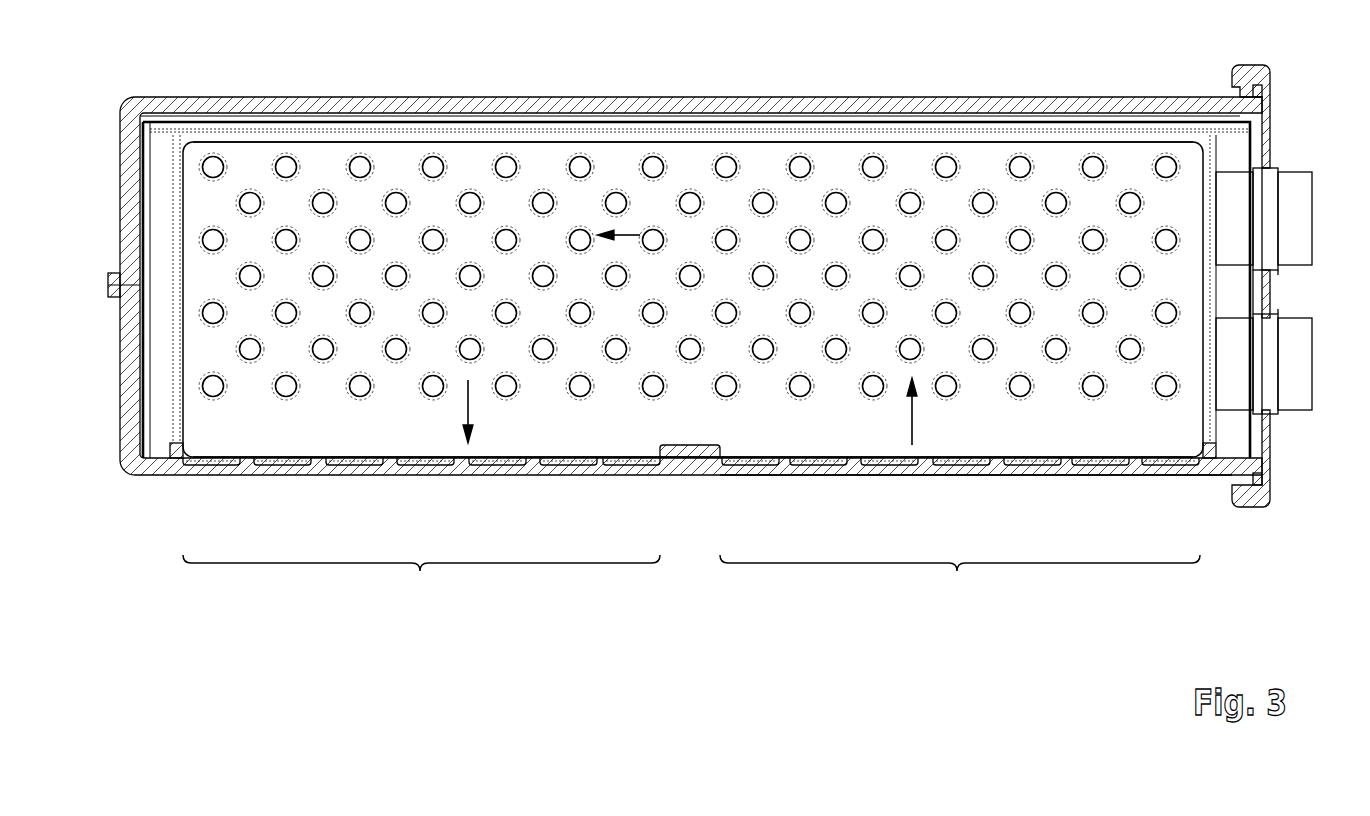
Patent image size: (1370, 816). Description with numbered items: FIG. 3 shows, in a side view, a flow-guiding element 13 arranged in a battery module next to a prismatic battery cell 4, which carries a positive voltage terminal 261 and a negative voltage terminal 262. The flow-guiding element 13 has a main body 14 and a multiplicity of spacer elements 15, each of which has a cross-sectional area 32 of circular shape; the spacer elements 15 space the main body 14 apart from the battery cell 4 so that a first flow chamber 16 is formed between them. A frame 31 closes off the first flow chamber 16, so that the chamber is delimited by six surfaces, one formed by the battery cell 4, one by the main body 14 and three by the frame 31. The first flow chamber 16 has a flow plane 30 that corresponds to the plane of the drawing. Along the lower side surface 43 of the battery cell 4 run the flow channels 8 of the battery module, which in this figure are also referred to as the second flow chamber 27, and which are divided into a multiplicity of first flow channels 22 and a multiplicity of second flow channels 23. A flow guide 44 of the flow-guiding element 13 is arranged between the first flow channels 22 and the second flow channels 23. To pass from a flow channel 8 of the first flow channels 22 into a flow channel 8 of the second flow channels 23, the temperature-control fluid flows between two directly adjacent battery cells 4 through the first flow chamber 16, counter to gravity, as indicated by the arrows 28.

The battery cell 4 is at (1197, 120).
The flow channel 8 is at (691, 499).
The flow-guiding element 13 is at (213, 437).
The main body 14 is at (288, 447).
The spacer elements 15 is at (360, 390).
The first flow chamber 16 is at (564, 422).
The multiplicity of first flow channels 22 is at (960, 581).
The multiplicity of second flow channels 23 is at (421, 581).
The second flow chamber 27 is at (803, 462).
The arrows 28 is at (640, 235).
The flow plane 30 is at (255, 160).
The frame 31 is at (830, 120).
The cross-sectional area 32 is at (689, 290).
The lower side surface 43 is at (885, 462).
The flow guide 44 is at (692, 455).
The positive voltage terminal 261 is at (1292, 395).
The negative voltage terminal 262 is at (1292, 190).